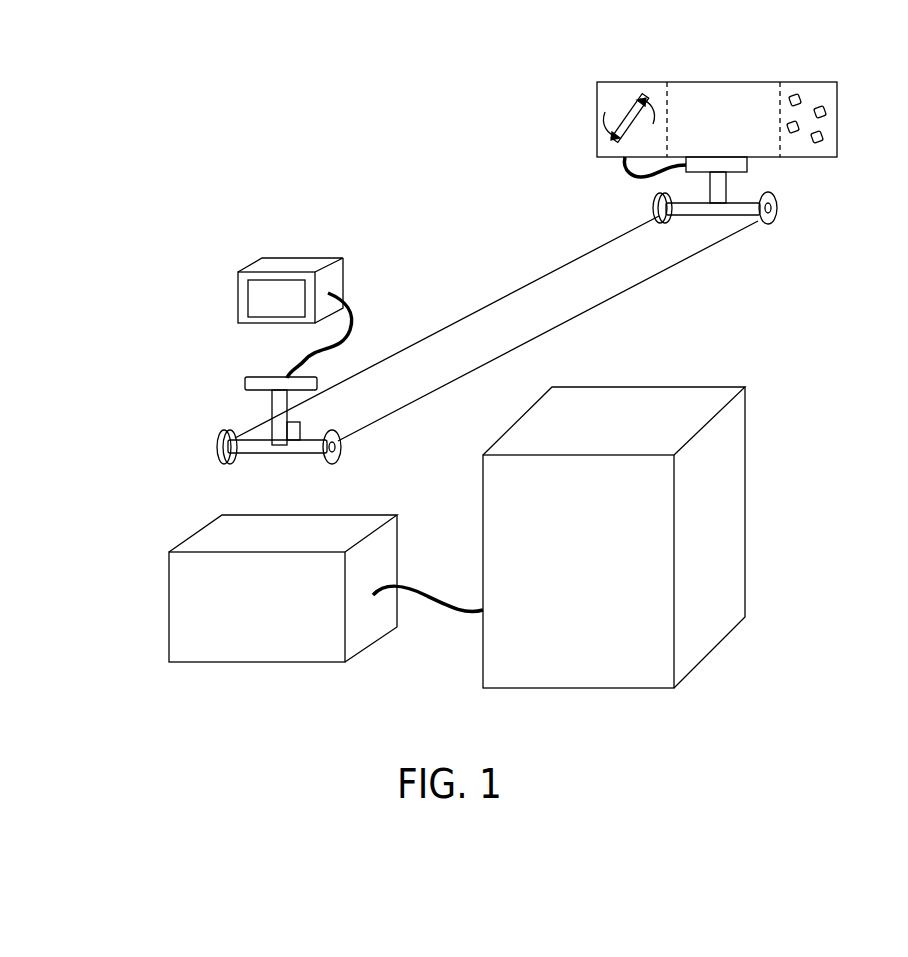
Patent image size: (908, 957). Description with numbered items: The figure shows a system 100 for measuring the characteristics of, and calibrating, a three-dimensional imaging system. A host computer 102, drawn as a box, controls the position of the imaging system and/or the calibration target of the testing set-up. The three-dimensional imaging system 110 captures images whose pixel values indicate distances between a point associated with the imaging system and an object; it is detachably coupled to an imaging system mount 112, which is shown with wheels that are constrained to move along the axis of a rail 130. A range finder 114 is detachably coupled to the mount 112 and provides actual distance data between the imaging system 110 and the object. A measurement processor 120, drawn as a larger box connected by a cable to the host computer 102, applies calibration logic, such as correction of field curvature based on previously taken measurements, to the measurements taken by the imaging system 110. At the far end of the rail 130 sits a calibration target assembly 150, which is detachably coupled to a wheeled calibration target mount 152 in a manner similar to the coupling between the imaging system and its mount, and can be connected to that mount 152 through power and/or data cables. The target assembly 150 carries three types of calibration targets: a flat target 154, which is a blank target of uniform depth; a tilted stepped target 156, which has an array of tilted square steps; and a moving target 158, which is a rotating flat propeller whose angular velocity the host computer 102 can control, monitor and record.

The system 100 is at (137, 258).
The host computer 102 is at (350, 515).
The 3D imaging system 110 is at (295, 258).
The 3D imaging system mount 112 is at (242, 382).
The range finder 114 is at (302, 424).
The measurement processor 120 is at (715, 387).
The rail 130 is at (635, 283).
The calibration target assembly 150 is at (838, 95).
The calibration target mount 152 is at (750, 164).
The flat target 154 is at (715, 82).
The tilted stepped target 156 is at (813, 82).
The moving target 158 is at (607, 82).